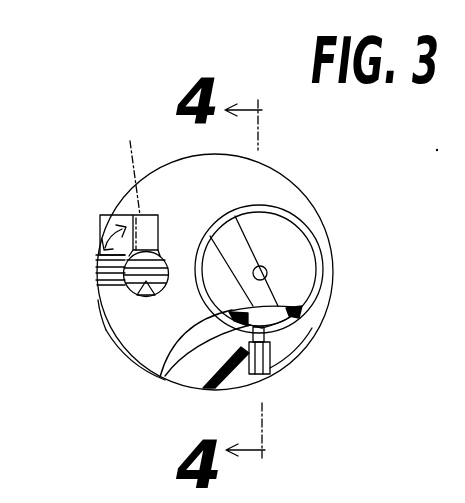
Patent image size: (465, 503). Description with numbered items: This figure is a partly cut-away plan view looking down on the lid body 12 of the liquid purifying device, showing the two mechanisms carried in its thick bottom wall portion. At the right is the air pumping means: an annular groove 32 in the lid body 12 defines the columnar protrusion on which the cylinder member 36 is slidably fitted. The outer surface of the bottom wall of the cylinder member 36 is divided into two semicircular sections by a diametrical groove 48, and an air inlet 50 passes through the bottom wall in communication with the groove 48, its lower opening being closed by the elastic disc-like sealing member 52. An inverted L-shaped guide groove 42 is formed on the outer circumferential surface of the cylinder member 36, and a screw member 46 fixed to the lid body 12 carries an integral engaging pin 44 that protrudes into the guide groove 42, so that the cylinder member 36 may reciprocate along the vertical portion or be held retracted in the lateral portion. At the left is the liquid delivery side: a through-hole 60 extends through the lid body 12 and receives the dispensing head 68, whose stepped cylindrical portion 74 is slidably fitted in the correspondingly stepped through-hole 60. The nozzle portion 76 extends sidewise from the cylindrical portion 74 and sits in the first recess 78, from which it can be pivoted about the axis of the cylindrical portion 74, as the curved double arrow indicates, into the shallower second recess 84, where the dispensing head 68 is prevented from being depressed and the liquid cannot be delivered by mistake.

The lid body 12 is at (107, 361).
The annular groove 32 is at (322, 250).
The cylinder member 36 is at (283, 240).
The guide groove 42 is at (281, 332).
The engaging pin 44 is at (203, 380).
The screw member 46 is at (259, 376).
The groove 48 is at (245, 240).
The air inlet 50 is at (268, 284).
The sealing member 52 is at (213, 238).
The through-hole 60 is at (136, 296).
The dispensing head 68 is at (132, 302).
The stepped cylindrical portion 74 is at (103, 308).
The nozzle portion 76 is at (76, 281).
The first recess 78 is at (97, 268).
The second recess 84 is at (108, 215).